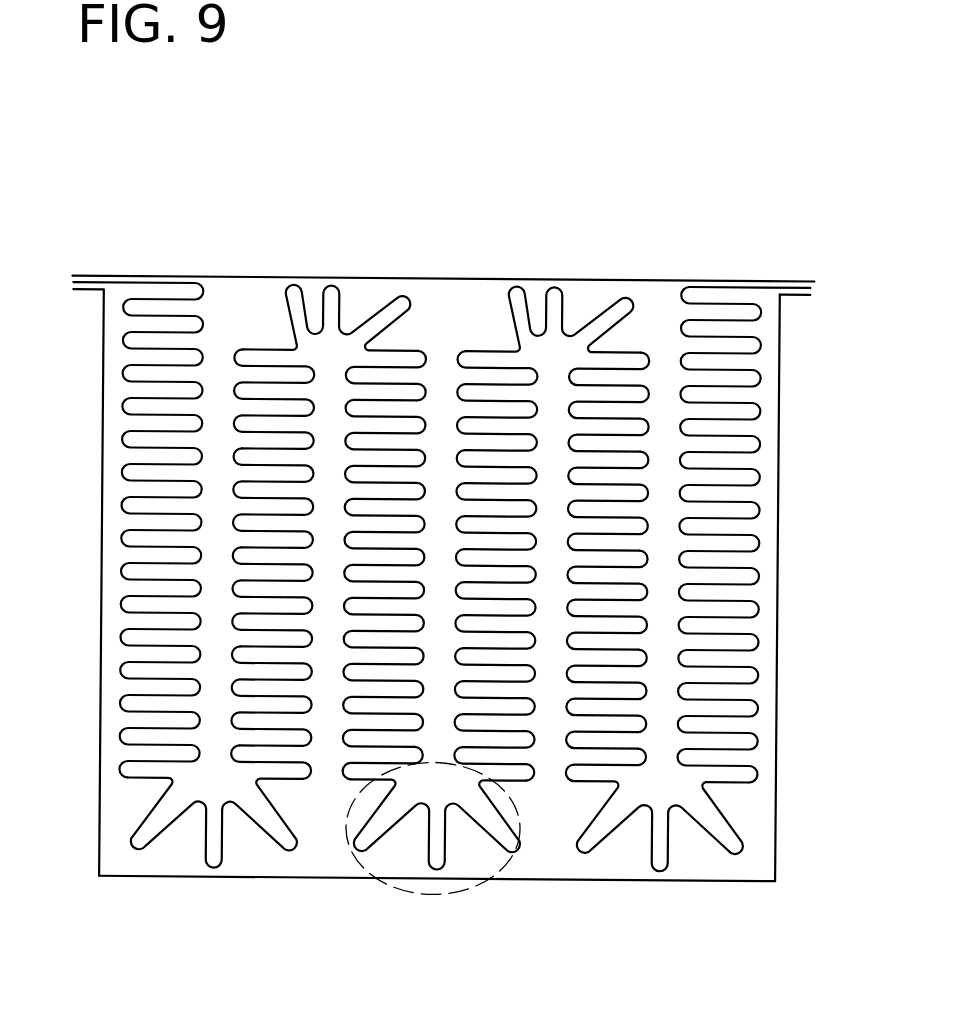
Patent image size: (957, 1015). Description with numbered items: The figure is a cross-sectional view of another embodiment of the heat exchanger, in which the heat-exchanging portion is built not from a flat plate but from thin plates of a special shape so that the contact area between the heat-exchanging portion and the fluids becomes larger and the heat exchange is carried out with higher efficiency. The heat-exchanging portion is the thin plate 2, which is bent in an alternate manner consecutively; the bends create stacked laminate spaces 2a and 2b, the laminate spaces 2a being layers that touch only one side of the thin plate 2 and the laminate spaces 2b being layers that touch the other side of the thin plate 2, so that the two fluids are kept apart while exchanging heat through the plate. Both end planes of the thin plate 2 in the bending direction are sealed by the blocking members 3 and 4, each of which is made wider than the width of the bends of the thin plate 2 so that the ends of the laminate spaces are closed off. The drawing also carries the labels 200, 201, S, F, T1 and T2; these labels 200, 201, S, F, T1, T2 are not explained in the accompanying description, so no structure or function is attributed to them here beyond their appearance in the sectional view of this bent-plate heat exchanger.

The planar heater 200 is at (173, 277).
The thin plate 2 is at (761, 707).
The laminate space 2a is at (418, 332).
The laminate space 2b is at (312, 816).
The blocking member 3 is at (100, 782).
The blocking member 4 is at (778, 612).
The turn portion region 201 is at (365, 868).
The start end of pattern S is at (68, 280).
The finish end of pattern F is at (811, 281).
The lower edge T1 is at (560, 879).
The upper edge T2 is at (500, 278).